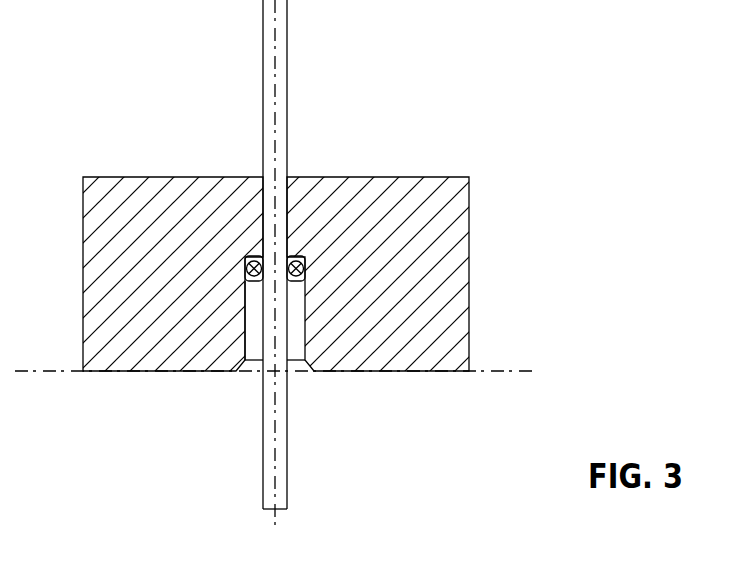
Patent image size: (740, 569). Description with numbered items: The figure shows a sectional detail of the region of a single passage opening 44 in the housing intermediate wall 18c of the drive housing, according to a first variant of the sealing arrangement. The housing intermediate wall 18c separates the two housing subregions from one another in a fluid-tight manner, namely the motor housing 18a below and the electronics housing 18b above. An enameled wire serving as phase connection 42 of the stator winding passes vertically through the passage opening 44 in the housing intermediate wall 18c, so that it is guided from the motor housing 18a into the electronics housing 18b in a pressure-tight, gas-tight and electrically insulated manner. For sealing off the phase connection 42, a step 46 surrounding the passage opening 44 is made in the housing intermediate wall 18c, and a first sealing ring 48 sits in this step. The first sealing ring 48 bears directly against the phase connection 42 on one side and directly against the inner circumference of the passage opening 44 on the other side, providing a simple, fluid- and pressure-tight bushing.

The motor housing 18a is at (437, 445).
The electronics housing 18b is at (188, 50).
The housing intermediate wall 18c is at (448, 264).
The phase connection 42 is at (287, 72).
The passage opening 44 is at (256, 320).
The step 46 is at (253, 255).
The first sealing ring 48 is at (303, 268).